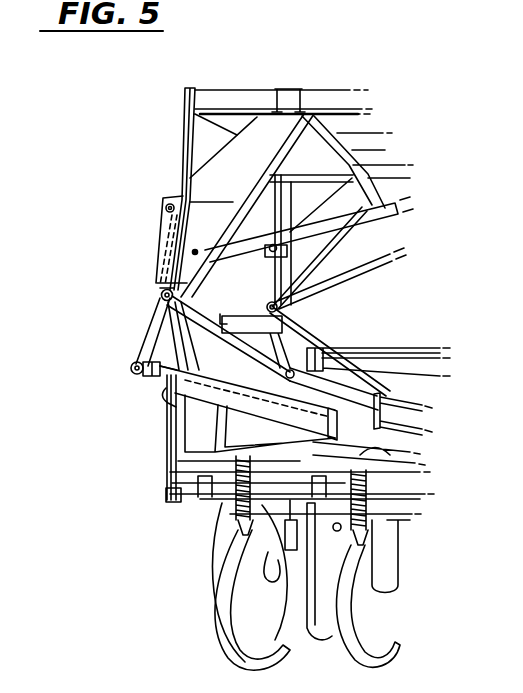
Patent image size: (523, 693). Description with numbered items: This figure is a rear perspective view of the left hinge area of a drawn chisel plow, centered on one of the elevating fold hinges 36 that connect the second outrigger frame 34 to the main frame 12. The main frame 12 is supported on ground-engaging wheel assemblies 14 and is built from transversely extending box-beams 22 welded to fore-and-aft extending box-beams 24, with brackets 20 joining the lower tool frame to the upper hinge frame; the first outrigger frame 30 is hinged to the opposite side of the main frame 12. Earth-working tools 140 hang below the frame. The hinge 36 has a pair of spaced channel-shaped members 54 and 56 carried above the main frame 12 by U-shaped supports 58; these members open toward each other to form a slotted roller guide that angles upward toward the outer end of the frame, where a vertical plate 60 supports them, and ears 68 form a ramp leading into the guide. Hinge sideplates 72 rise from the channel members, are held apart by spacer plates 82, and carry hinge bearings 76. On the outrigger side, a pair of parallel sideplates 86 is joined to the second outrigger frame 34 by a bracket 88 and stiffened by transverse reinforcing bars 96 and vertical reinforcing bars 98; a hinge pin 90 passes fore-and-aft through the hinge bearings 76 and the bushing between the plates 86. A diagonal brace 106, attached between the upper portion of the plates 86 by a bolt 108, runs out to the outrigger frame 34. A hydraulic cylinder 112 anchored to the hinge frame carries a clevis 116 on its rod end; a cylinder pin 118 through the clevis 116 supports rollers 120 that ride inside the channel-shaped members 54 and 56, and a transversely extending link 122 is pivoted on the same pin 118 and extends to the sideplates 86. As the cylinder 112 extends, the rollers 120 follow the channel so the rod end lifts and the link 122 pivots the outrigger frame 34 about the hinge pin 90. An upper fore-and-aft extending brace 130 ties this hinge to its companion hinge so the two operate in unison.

The main frame 12 is at (150, 480).
The ground-engaging wheel assemblies 14 is at (210, 540).
The brackets 20 is at (324, 571).
The transversely extending box-beams 22 is at (413, 520).
The fore-and-aft extending box-beams 24 is at (403, 487).
The first outrigger frame 30 is at (440, 320).
The second outrigger frame 34 is at (348, 86).
The elevating fold hinges 36 is at (132, 324).
The channel-shaped member 54 is at (260, 408).
The channel-shaped member 56 is at (330, 423).
The U-shaped supports 58 is at (207, 425).
The vertical plate 60 is at (168, 427).
The ears 68 is at (165, 400).
The hinge sideplate 72 is at (227, 365).
The hinge bearings 76 is at (162, 293).
The spacer plates 82 is at (213, 312).
The parallel sideplates 86 is at (274, 158).
The bracket 88 is at (298, 89).
The hinge pin 90 is at (161, 296).
The transverse reinforcing bars 96 is at (218, 207).
The vertical reinforcing bars 98 is at (190, 203).
The diagonal brace 106 is at (382, 217).
The bolt 108 is at (195, 252).
The hydraulic cylinder 112 is at (410, 412).
The clevis 116 is at (130, 380).
The cylinder pin 118 is at (134, 358).
The rollers 120 is at (130, 367).
The transversely extending link 122 is at (158, 267).
The upper fore-and-aft extending brace 130 is at (278, 326).
The earth-working tools 140 is at (350, 660).